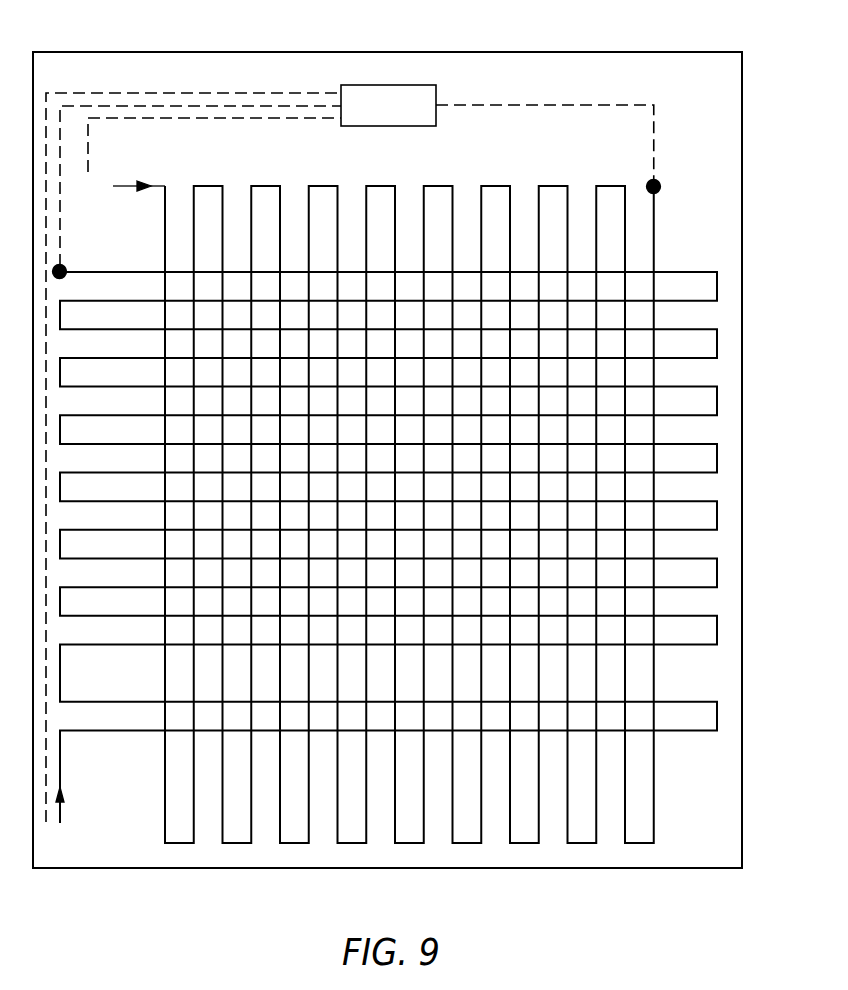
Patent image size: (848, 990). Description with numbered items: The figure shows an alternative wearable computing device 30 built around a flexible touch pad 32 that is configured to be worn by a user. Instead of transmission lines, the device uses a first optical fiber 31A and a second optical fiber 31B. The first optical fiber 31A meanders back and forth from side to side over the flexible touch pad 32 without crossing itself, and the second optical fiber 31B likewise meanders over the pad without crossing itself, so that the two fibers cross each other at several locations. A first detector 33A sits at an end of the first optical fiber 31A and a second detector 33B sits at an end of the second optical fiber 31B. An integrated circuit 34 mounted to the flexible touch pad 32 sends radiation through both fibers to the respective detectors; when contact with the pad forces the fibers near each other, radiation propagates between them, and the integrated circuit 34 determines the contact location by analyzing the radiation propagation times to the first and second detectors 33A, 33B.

The wearable computing device 30 is at (418, 440).
The flexible touch pad 32 is at (212, 73).
The integrated circuit 34 is at (390, 85).
The first optical fiber 31A is at (688, 301).
The second optical fiber 31B is at (495, 186).
The first detector 33A is at (64, 266).
The second detector 33B is at (661, 186).